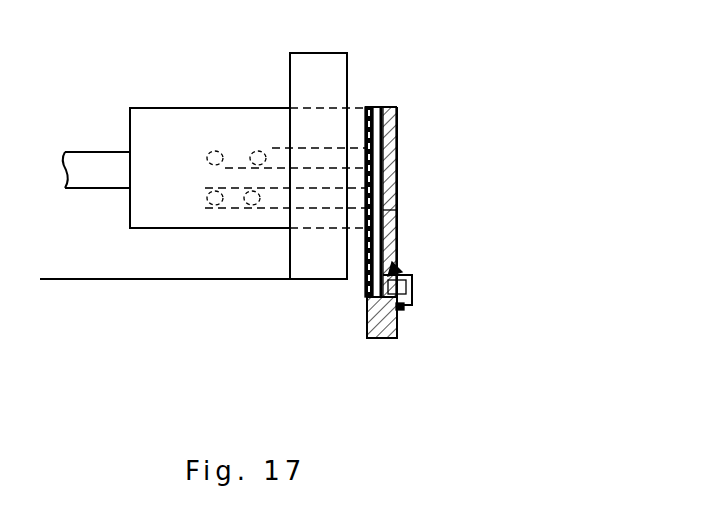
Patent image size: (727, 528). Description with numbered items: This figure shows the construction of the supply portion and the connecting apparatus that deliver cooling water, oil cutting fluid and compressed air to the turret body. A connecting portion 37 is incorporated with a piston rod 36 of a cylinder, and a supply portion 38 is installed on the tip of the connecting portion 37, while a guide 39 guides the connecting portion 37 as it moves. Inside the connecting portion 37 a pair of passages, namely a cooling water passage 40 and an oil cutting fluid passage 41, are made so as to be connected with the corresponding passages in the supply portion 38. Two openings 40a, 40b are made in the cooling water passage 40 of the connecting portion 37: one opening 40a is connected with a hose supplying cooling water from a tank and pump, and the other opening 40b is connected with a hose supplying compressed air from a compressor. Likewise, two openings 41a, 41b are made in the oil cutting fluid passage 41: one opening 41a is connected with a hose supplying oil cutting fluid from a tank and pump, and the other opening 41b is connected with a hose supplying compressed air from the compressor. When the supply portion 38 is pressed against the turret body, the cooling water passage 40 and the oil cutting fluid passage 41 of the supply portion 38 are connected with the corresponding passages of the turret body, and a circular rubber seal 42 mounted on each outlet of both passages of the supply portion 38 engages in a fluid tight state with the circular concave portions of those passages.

The piston rod 36 is at (77, 167).
The connecting portion 37 is at (136, 218).
The supply portion 38 is at (397, 130).
The guide 39 is at (333, 77).
The cooling water passage 40 is at (270, 208).
The opening 40a is at (248, 205).
The opening 40b is at (207, 204).
The oil cutting fluid passage 41 is at (281, 148).
The opening 41a is at (252, 155).
The opening 41b is at (210, 152).
The circular rubber seal 42 is at (395, 270).